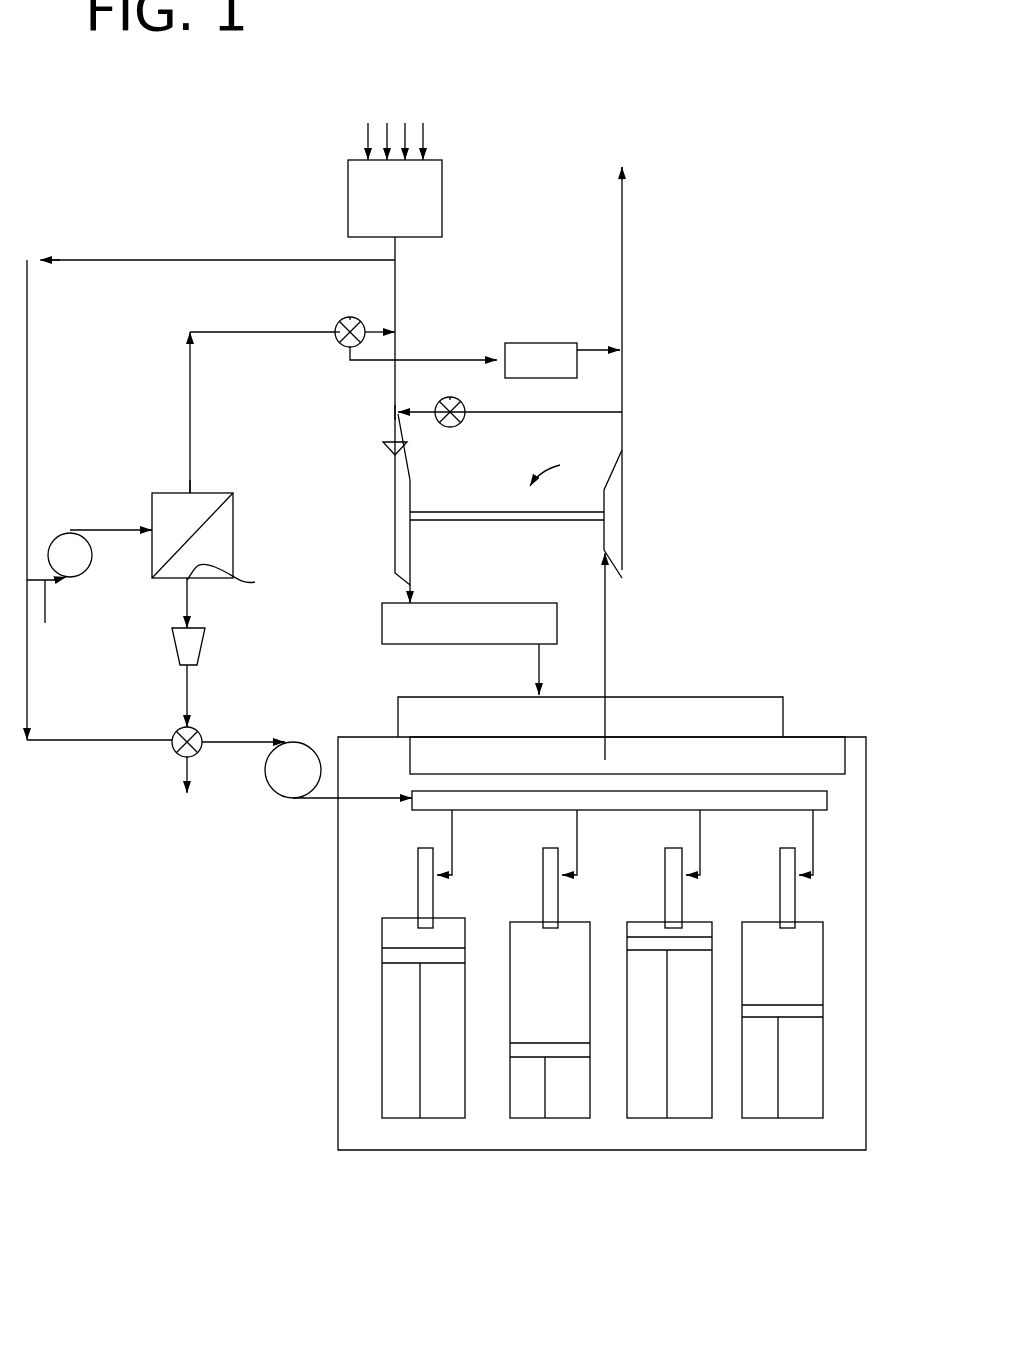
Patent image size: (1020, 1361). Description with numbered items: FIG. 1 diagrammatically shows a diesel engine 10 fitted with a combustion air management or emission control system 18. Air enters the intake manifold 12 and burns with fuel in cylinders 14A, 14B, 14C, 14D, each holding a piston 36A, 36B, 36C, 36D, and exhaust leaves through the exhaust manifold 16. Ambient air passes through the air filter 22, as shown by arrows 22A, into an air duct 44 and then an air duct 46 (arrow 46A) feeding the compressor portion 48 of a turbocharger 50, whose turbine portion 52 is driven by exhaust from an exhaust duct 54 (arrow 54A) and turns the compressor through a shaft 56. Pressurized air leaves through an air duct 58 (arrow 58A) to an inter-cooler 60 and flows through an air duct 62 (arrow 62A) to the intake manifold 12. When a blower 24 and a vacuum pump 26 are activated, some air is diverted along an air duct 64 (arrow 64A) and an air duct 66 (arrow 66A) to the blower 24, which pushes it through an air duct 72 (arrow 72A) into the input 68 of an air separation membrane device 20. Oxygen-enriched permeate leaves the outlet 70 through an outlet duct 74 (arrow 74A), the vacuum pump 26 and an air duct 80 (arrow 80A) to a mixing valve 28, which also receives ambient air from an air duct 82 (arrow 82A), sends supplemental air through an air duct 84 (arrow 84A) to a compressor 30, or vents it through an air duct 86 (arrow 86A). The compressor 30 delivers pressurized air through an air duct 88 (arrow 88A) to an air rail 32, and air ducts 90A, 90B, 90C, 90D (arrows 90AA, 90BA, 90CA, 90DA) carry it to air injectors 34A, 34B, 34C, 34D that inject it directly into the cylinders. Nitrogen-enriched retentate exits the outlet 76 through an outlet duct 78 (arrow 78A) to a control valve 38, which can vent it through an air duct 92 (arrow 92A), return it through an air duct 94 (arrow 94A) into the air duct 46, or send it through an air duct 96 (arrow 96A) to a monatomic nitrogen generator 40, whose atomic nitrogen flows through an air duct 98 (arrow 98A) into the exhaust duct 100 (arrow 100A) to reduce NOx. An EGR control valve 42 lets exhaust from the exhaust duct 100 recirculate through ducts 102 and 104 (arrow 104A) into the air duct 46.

The diesel engine 10 is at (337, 1085).
The intake manifold 12 is at (763, 702).
The cylinder 14A is at (460, 1120).
The cylinder 14B is at (585, 1120).
The cylinder 14C is at (695, 1120).
The cylinder 14D is at (805, 1120).
The exhaust manifold 16 is at (817, 752).
The combustion air management control system 18 is at (188, 179).
The air separation membrane device 20 is at (235, 528).
The air filter 22 is at (442, 193).
The arrows 22A is at (427, 116).
The blower 24 is at (70, 532).
The vacuum pump 26 is at (175, 645).
The mixing valve 28 is at (173, 752).
The supplemental air compressor 30 is at (280, 795).
The air rail 32 is at (413, 796).
The air injector 34A is at (418, 895).
The air injector 34B is at (543, 897).
The air injector 34C is at (665, 897).
The air injector 34D is at (780, 897).
The piston 36A is at (388, 955).
The piston 36B is at (525, 1048).
The piston 36C is at (652, 944).
The piston 36D is at (763, 1010).
The control valve 38 is at (340, 338).
The monatomic nitrogen generator 40 is at (540, 353).
The EGR control valve 42 is at (455, 426).
The air duct 44 is at (397, 246).
The air duct 46 is at (392, 413).
The arrow 46A is at (383, 447).
The compressor portion 48 is at (394, 488).
The turbocharger 50 is at (557, 463).
The turbine portion 52 is at (624, 492).
The exhaust duct 54 is at (610, 650).
The arrow 54A is at (624, 580).
The shaft 56 is at (512, 521).
The air duct 58 is at (411, 560).
The arrow 58A is at (408, 585).
The inter-cooler 60 is at (512, 604).
The air duct 62 is at (538, 660).
The arrow 62A is at (537, 688).
The air duct 64 is at (215, 258).
The arrow 64A is at (38, 256).
The air duct 66 is at (52, 614).
The arrow 66A is at (60, 582).
The input 68 is at (118, 560).
The outlet 70 is at (240, 578).
The air duct 72 is at (100, 528).
The arrow 72A is at (143, 530).
The outlet duct 74 is at (185, 600).
The arrow 74A is at (192, 620).
The outlet 76 is at (195, 492).
The outlet duct 78 is at (192, 408).
The arrow 78A is at (188, 332).
The air duct 80 is at (190, 680).
The arrow 80A is at (186, 718).
The air duct 82 is at (28, 672).
The arrow 82A is at (97, 762).
The air duct 84 is at (225, 740).
The arrow 84A is at (280, 740).
The air duct 86 is at (185, 770).
The arrow 86A is at (190, 785).
The air duct 88 is at (318, 800).
The arrow 88A is at (407, 803).
The air duct 90A is at (453, 833).
The arrow 90AA is at (440, 876).
The air duct 90B is at (578, 833).
The arrow 90BA is at (565, 876).
The air duct 90C is at (701, 833).
The arrow 90CA is at (689, 876).
The air duct 90D is at (814, 825).
The arrow 90DA is at (801, 876).
The air duct 92 is at (340, 322).
The arrow 92A is at (350, 316).
The air duct 94 is at (382, 330).
The arrow 94A is at (390, 330).
The air duct 96 is at (425, 358).
The arrow 96A is at (495, 357).
The air duct 98 is at (594, 348).
The arrow 98A is at (625, 350).
The exhaust duct 100 is at (624, 312).
The arrow 100A is at (625, 172).
The duct 102 is at (622, 410).
The duct 104 is at (447, 398).
The arrow 104A is at (439, 450).